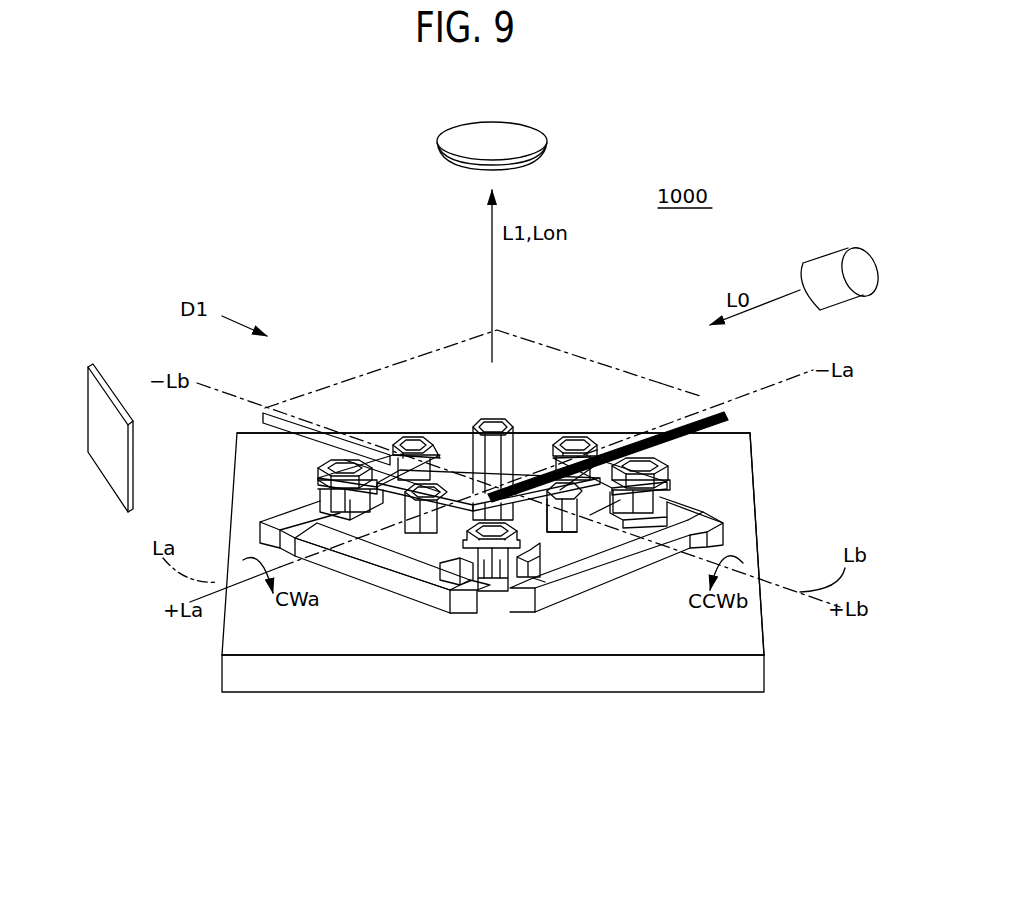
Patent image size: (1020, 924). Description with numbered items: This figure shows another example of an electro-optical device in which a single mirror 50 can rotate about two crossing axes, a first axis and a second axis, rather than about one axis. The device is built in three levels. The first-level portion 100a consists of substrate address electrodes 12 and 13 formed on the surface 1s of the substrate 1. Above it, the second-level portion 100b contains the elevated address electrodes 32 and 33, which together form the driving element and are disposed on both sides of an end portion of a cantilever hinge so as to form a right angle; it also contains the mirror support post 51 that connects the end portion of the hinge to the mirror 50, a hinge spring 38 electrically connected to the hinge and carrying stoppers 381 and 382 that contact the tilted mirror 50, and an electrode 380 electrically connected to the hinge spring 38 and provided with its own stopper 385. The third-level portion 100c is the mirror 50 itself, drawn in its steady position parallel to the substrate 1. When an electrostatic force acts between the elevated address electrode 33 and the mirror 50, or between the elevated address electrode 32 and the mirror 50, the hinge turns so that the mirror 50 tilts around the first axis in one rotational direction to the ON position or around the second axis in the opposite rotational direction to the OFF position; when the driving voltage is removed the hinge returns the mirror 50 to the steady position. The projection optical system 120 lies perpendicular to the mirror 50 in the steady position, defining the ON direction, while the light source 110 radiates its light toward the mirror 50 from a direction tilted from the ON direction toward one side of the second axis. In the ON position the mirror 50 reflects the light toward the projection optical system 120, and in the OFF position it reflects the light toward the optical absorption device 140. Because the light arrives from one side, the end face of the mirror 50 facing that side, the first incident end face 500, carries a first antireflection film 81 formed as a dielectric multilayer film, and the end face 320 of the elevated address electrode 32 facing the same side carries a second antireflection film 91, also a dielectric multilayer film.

The substrate 1 is at (743, 677).
The surface of the substrate 1s is at (703, 645).
The substrate address electrode 12 is at (585, 500).
The substrate address electrode 13 is at (368, 553).
The elevated address electrode 32 is at (655, 495).
The elevated address electrode 33 is at (395, 470).
The hinge spring 38 is at (548, 455).
The mirror 50 is at (662, 380).
The mirror support post 51 is at (510, 425).
The first antireflection film 81 is at (718, 410).
The second antireflection film 91 is at (547, 523).
The first-level portion 100a is at (418, 625).
The second-level portion 100b is at (600, 455).
The third-level portion 100c is at (425, 338).
The light source 110 is at (822, 265).
The projection optical system 120 is at (547, 139).
The optical absorption device 140 is at (113, 470).
The end face of the elevated address electrode 320 is at (590, 560).
The electrode 380 is at (478, 560).
The stopper 381 is at (670, 479).
The stopper 382 is at (320, 480).
The stopper 385 is at (488, 552).
The first incident end face 500 is at (605, 480).